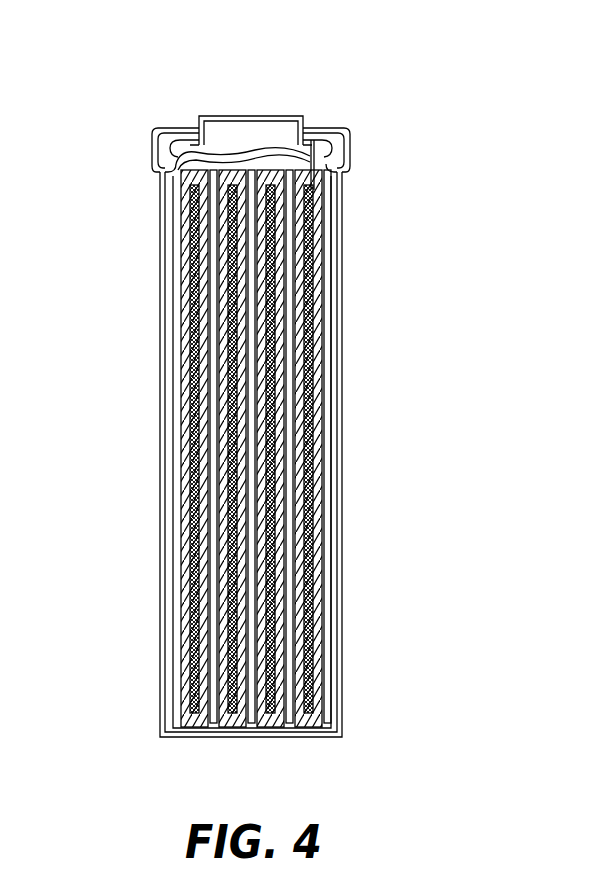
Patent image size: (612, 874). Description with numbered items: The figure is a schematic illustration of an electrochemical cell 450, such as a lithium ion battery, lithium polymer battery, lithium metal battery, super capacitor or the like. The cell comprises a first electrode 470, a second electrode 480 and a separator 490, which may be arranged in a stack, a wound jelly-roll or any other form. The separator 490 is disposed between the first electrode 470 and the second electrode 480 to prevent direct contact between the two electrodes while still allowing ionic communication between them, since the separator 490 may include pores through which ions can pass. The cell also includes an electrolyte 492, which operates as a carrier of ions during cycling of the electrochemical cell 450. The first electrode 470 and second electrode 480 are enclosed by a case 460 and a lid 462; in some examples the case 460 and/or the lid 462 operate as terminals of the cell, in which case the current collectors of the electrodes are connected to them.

The electrochemical cell 450 is at (130, 99).
The case 460 is at (161, 203).
The lid 462 is at (277, 116).
The first electrode 470 is at (172, 279).
The second electrode 480 is at (185, 340).
The separator 490 is at (194, 427).
The electrolyte 492 is at (340, 161).